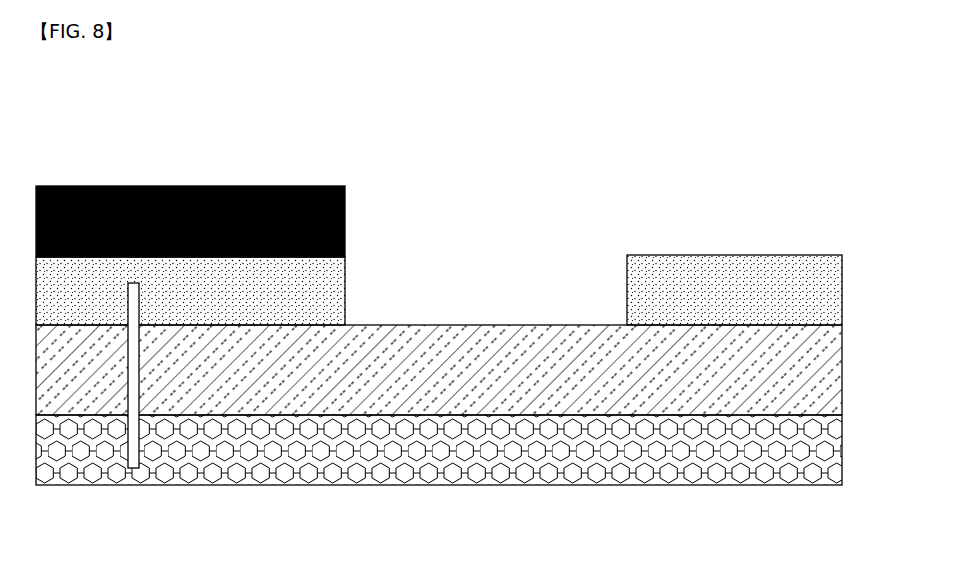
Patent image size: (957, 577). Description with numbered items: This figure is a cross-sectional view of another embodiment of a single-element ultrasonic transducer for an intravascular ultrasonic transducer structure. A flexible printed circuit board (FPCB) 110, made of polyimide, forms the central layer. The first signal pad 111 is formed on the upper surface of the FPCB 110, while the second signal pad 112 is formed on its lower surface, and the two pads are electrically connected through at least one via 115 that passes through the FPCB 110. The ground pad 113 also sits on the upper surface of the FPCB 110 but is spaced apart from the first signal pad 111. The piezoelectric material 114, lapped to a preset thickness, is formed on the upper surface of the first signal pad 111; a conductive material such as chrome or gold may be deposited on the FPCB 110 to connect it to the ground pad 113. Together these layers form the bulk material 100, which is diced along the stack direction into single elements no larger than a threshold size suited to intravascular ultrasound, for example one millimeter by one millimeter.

The bulk material 100 is at (439, 319).
The flexible printed circuit board 110 is at (520, 325).
The first signal pad 111 is at (345, 280).
The second signal pad 112 is at (508, 468).
The ground pad 113 is at (712, 255).
The piezoelectric material 114 is at (345, 208).
The via 115 is at (139, 430).